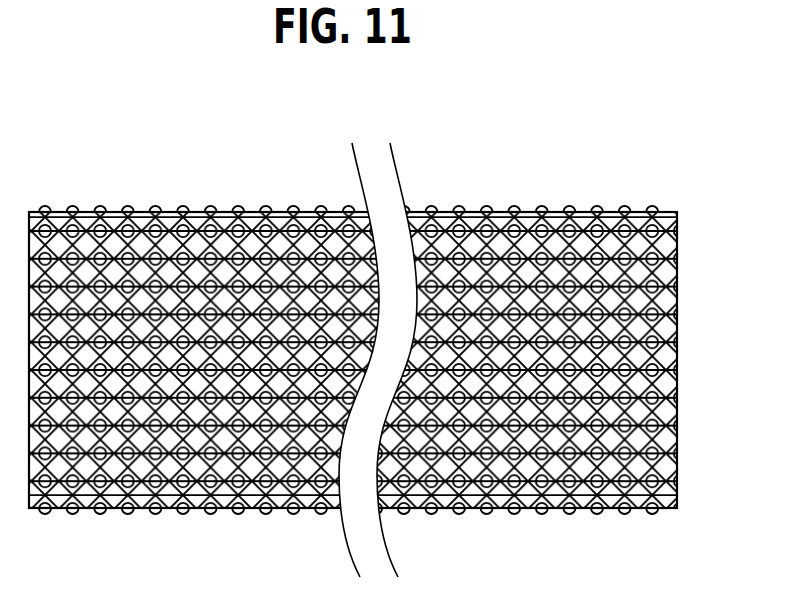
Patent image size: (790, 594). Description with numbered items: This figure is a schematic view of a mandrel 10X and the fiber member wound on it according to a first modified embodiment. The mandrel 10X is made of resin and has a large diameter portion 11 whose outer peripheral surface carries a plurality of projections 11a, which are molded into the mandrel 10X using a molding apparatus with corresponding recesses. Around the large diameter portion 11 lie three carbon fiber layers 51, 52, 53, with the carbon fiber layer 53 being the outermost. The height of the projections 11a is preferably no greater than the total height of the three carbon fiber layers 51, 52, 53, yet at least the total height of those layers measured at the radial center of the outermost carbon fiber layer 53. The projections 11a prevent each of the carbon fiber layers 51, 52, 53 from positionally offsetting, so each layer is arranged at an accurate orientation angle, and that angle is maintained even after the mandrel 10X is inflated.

The mandrel 10X is at (391, 289).
The large diameter portion 11 is at (391, 328).
The projections 11a is at (597, 206).
The carbon fiber layer 51 is at (85, 235).
The carbon fiber layer 52 is at (168, 235).
The outermost carbon fiber layer 53 is at (250, 235).